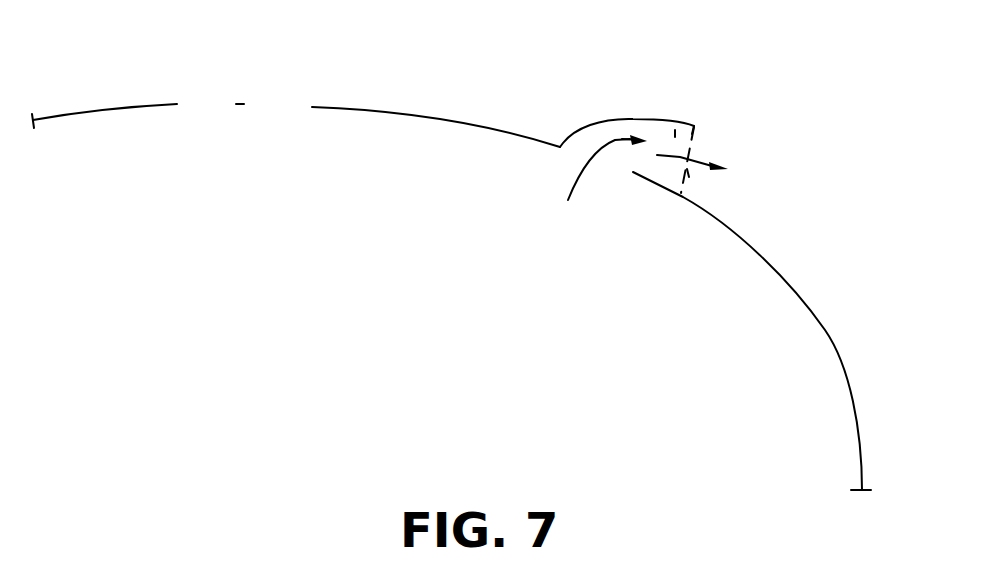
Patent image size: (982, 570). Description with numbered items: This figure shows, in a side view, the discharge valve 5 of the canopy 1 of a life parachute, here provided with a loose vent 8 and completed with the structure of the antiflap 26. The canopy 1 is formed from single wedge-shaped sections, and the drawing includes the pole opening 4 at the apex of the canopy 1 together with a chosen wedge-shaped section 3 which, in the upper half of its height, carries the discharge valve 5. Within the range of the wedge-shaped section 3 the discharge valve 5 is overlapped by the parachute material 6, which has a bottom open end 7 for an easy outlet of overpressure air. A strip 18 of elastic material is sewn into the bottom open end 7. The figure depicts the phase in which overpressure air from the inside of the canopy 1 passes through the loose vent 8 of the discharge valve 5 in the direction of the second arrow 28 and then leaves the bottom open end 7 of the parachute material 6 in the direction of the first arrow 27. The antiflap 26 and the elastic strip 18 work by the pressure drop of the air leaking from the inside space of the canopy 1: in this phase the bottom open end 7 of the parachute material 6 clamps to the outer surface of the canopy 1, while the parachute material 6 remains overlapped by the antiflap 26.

The canopy 1 is at (487, 258).
The wedge-shaped section 3 is at (115, 107).
The pole opening 4 is at (240, 103).
The discharge valve 5 is at (617, 186).
The parachute material 6 is at (595, 142).
The bottom open end 7 is at (675, 133).
The loose vent 8 is at (613, 162).
The strip of elastic material 18 is at (690, 172).
The antiflap 26 is at (690, 183).
The first arrow 27 is at (667, 157).
The second arrow 28 is at (578, 176).